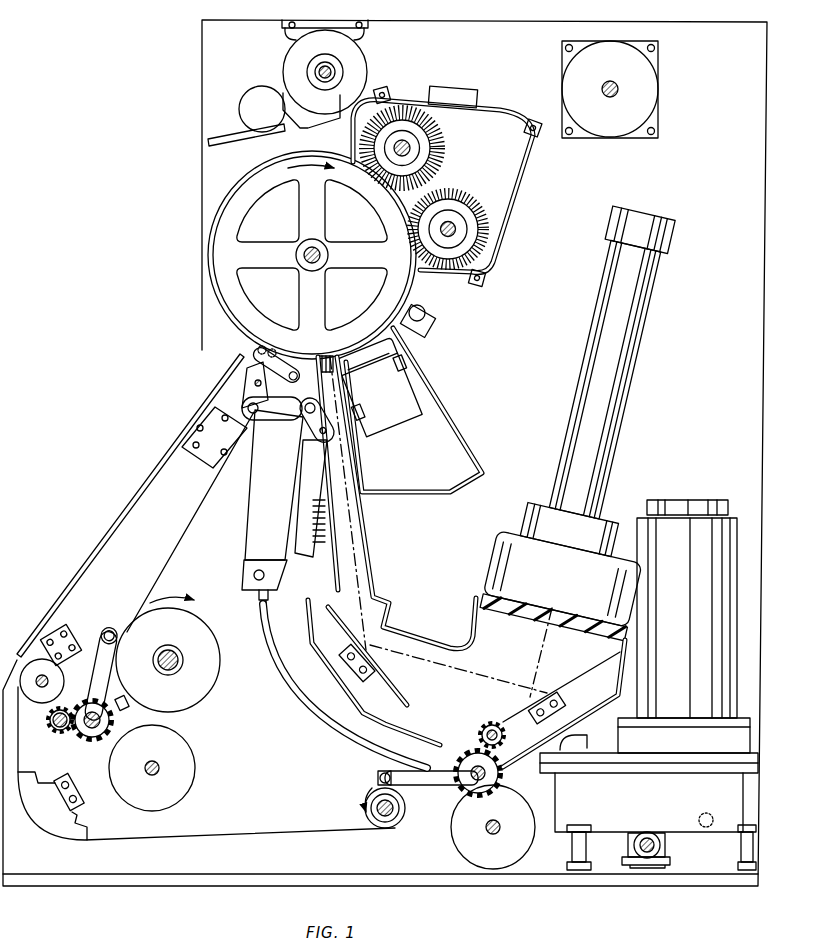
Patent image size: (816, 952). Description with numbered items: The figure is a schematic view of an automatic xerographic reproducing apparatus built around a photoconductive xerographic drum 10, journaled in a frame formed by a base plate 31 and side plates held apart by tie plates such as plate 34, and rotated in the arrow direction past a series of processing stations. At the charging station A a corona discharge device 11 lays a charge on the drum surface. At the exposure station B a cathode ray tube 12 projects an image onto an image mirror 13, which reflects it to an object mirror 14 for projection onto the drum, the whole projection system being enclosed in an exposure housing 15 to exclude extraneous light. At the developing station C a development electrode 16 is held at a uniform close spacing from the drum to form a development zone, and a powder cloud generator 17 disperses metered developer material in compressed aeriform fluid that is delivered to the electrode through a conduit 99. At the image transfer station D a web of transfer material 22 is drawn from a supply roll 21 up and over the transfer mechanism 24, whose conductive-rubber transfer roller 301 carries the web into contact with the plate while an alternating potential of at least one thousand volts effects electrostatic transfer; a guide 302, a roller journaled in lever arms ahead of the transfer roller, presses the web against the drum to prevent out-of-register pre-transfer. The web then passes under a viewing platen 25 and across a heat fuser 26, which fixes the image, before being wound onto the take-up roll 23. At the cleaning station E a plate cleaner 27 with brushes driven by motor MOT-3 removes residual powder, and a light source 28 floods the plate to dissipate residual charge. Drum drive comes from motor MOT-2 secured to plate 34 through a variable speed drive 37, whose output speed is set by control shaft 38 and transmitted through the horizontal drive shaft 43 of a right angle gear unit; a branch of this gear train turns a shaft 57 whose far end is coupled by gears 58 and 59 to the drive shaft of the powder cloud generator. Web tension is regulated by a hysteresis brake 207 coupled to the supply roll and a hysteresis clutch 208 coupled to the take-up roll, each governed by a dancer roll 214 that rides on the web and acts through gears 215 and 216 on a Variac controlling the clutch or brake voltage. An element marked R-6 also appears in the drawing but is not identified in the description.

The xerographic drum 10 is at (201, 253).
The corona discharge device 11 is at (394, 412).
The cathode ray tube 12 is at (638, 345).
The image mirror 13 is at (592, 671).
The object mirror 14 is at (404, 703).
The exposure housing 15 is at (412, 630).
The development electrode 16 is at (243, 540).
The powder cloud generator 17 is at (695, 492).
The supply roll 21 is at (184, 660).
The web of transfer material 22 is at (160, 565).
The take-up roll 23 is at (406, 808).
The transfer mechanism 24 is at (242, 381).
The viewing platen 25 is at (136, 502).
The heat fuser 26 is at (90, 834).
The plate cleaner 27 is at (510, 114).
The light source 28 is at (437, 325).
The base plate 31 is at (657, 886).
The tie plate 34 is at (325, 14).
The variable speed drive 37 is at (305, 80).
The control shaft 38 is at (223, 143).
The drive shaft 43 is at (333, 72).
The shaft 57 is at (665, 844).
The gear 58 is at (628, 844).
The gear 59 is at (672, 862).
The conduit 99 is at (292, 690).
The hysteresis brake 207 is at (193, 759).
The hysteresis clutch 208 is at (461, 846).
The dancer roll 214 is at (115, 660).
The gear 215 is at (95, 738).
The gear 216 is at (54, 738).
The transfer roller 301 is at (263, 346).
The guide 302 is at (277, 354).
The charging station A is at (437, 366).
The exposure station B is at (372, 523).
The developing station C is at (241, 511).
The image transfer station D is at (237, 350).
The drum cleaning station E is at (539, 169).
The motor MOT-2 is at (360, 77).
The motor MOT-3 is at (653, 88).
The relay R-6 is at (276, 127).